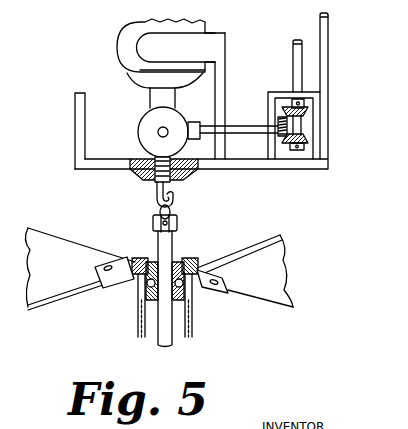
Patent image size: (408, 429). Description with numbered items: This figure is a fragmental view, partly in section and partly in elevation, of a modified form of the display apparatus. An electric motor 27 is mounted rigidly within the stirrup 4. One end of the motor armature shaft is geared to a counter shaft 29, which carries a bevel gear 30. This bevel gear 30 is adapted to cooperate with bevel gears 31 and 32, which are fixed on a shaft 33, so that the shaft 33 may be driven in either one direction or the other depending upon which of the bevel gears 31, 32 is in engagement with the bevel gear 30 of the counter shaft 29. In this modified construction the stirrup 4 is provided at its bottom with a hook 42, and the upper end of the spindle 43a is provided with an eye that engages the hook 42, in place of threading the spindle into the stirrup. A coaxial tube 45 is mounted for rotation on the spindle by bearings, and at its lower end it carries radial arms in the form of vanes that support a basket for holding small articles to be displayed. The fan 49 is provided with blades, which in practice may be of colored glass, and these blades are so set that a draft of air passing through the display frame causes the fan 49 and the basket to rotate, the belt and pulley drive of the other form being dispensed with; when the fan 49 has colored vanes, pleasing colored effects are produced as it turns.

The stirrup 4 is at (328, 63).
The electric motor 27 is at (117, 44).
The counter shaft 29 is at (252, 126).
The bevel gear 30 is at (293, 102).
The bevel gear 31 is at (305, 139).
The bevel gear 32 is at (305, 112).
The shaft 33 is at (293, 45).
The hook 42 is at (155, 192).
The spindle 43a is at (160, 336).
The coaxial tube 45 is at (192, 334).
The fan 49 is at (45, 306).